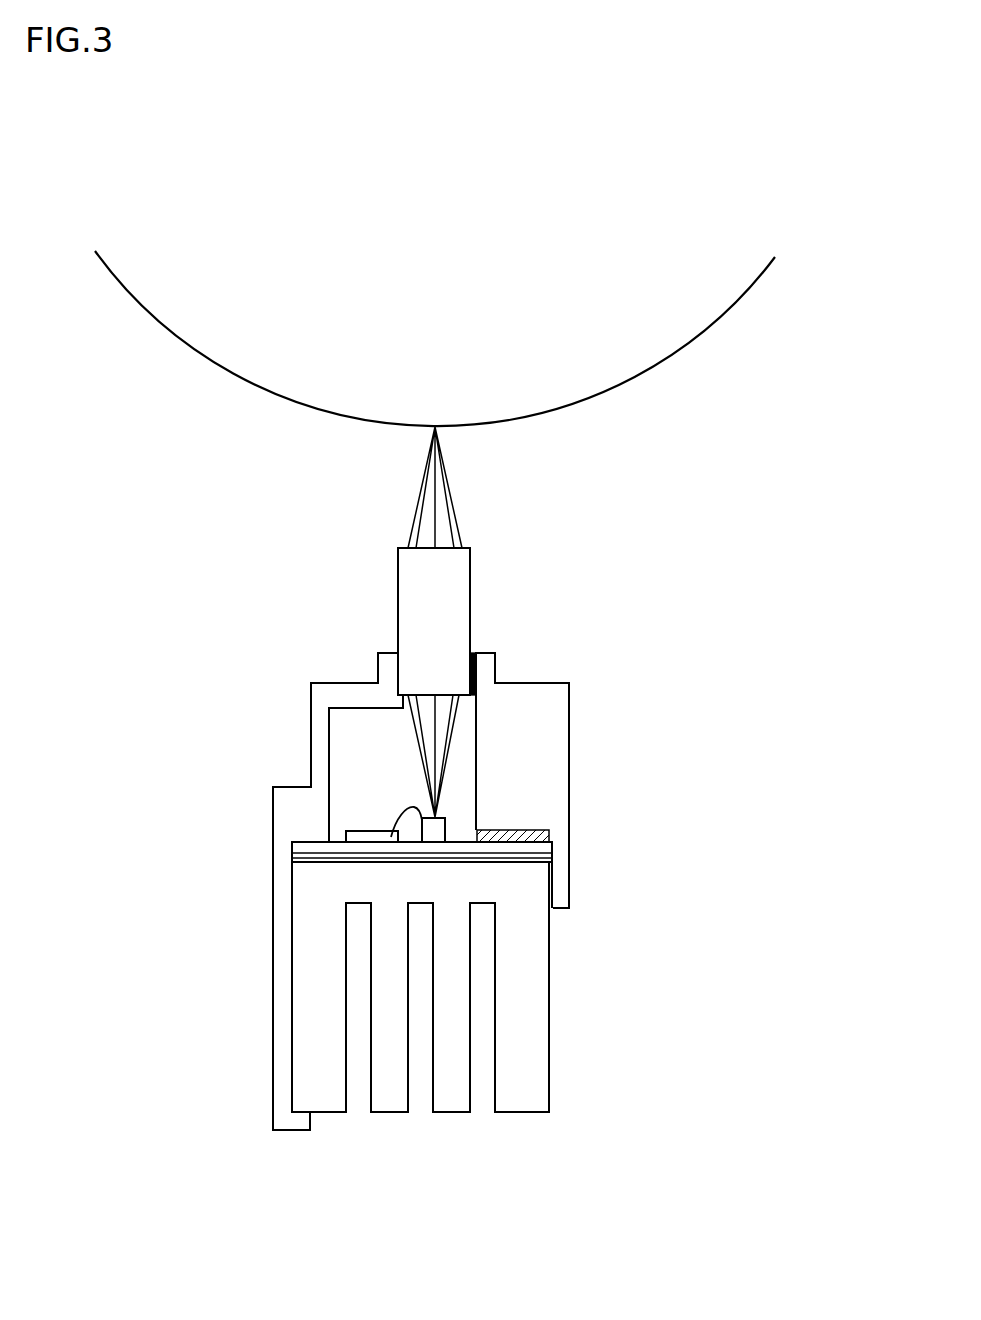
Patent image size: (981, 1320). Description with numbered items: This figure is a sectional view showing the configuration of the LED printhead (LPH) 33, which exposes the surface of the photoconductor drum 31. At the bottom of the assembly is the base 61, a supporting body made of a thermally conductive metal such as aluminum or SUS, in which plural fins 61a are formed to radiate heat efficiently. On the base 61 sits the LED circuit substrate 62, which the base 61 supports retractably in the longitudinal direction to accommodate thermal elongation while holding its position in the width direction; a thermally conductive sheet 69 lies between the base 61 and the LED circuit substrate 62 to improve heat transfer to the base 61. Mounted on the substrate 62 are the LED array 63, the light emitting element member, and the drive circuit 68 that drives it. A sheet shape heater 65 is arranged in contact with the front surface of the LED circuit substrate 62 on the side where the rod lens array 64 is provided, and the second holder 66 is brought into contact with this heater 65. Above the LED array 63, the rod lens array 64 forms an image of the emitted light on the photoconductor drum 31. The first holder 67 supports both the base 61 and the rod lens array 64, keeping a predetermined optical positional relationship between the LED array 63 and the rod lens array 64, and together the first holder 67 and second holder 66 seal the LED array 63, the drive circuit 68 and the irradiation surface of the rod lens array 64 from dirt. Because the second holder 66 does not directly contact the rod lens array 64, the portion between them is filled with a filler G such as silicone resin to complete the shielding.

The photoconductor drum 31 is at (650, 370).
The LED printhead (LPH) 33 is at (637, 591).
The rod lens array 64 is at (470, 610).
The filler G is at (475, 648).
The first holder 67 is at (310, 703).
The second holder 66 is at (570, 705).
The drive circuit 68 is at (362, 830).
The LED array 63 is at (447, 822).
The sheet shape heater 65 is at (535, 830).
The LED circuit substrate 62 is at (550, 850).
The thermally conductive sheet 69 is at (320, 865).
The base 61 is at (550, 1042).
The fins 61a is at (393, 1112).